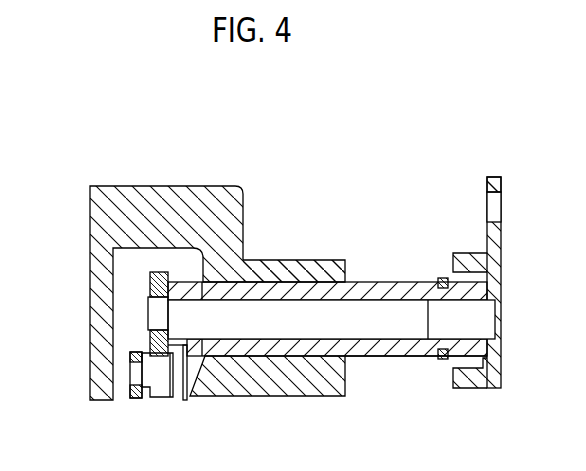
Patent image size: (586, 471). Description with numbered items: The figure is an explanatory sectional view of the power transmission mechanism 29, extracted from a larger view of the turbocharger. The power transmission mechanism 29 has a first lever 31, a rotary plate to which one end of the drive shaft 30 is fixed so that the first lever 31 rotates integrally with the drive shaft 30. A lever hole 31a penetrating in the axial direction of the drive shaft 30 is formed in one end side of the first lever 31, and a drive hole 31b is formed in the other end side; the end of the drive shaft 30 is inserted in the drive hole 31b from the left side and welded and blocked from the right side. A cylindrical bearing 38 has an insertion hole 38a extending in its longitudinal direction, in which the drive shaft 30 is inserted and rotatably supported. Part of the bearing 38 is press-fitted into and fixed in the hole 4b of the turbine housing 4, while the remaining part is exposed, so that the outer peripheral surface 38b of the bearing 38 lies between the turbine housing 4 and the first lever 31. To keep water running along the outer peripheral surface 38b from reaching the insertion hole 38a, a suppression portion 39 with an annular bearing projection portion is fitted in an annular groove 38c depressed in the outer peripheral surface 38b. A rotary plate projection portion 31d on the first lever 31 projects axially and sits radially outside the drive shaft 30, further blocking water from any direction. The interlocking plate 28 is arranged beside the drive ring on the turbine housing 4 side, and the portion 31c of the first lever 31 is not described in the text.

The turbine housing 4 is at (198, 187).
The hole (housing hole) 4b is at (245, 306).
The interlocking plate 28 is at (150, 280).
The power transmission mechanism 29 is at (403, 134).
The drive shaft 30 is at (305, 315).
The first lever (rotary plate) 31 is at (498, 177).
The lever hole 31a is at (502, 222).
The drive hole 31b is at (498, 333).
The upper end of bracket 31c is at (487, 178).
The rotary plate projection portion 31d is at (460, 389).
The bearing 38 is at (178, 401).
The insertion hole 38a is at (312, 339).
The outer peripheral surface 38b is at (367, 357).
The annular groove 38c is at (442, 361).
The suppression portion 39 is at (438, 279).